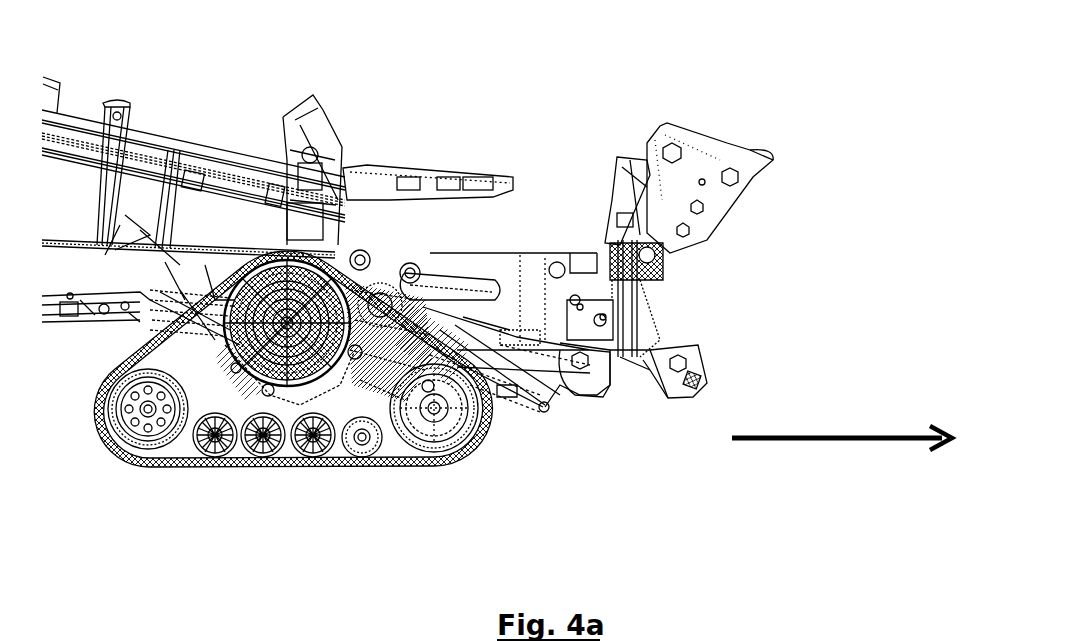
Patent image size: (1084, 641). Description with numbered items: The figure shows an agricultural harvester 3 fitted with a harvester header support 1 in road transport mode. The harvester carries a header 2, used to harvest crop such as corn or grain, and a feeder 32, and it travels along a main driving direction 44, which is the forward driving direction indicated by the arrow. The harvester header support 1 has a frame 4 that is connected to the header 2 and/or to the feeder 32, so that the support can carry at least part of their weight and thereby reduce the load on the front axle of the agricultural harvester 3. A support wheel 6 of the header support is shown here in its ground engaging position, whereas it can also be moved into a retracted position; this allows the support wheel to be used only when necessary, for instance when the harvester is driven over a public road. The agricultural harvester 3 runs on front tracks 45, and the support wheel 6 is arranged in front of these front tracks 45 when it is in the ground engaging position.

The harvester header support 1 is at (542, 440).
The header 2 is at (733, 140).
The agricultural harvester 3 is at (455, 111).
The frame 4 is at (545, 412).
The support wheel 6 is at (370, 395).
The feeder 32 is at (538, 250).
The main driving direction 44 is at (842, 429).
The front tracks 45 is at (247, 470).